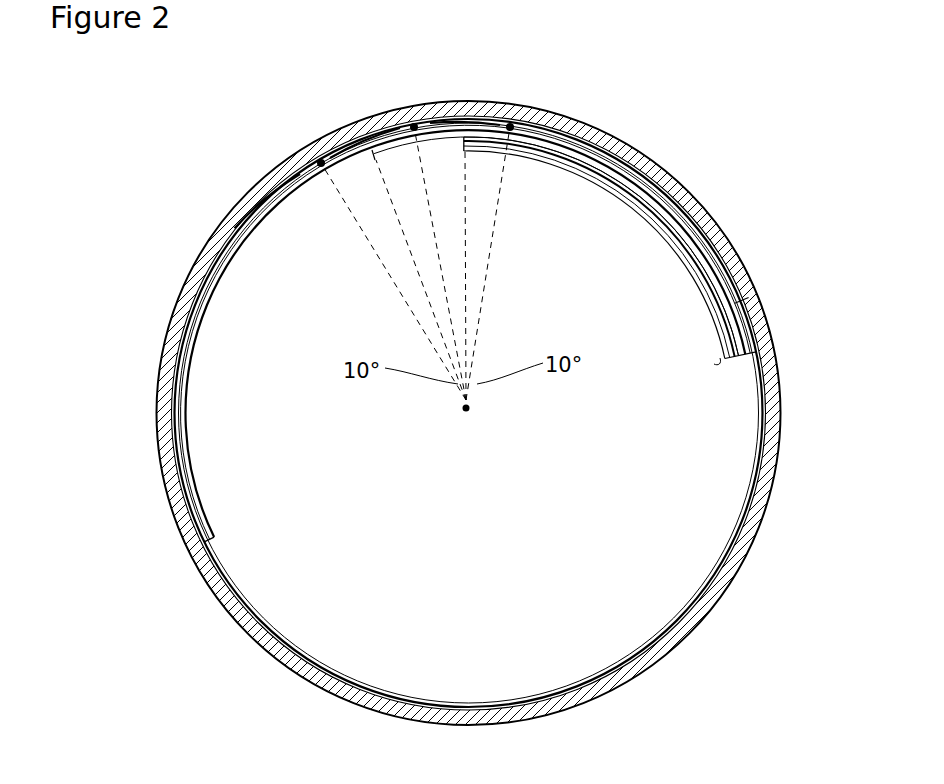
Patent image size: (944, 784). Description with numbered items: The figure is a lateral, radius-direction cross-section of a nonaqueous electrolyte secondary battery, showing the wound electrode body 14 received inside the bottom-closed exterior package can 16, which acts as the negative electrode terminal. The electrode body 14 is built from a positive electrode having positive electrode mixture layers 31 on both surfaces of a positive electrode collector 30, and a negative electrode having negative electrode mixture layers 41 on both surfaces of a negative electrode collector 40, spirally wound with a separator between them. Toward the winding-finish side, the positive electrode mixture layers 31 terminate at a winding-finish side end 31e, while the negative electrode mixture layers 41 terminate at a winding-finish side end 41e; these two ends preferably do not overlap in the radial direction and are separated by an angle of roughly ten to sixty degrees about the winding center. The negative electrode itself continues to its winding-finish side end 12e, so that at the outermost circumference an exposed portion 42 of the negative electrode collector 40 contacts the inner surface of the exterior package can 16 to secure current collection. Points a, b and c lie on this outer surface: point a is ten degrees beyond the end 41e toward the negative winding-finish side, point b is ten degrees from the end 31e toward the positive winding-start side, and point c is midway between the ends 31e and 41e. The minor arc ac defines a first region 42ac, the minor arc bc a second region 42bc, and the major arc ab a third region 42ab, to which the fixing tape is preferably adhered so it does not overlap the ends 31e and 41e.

The winding-finish side end of the negative electrode 12e is at (208, 540).
The electrode body 14 is at (738, 302).
The exterior package can 16 is at (772, 432).
The positive electrode collector 30 is at (692, 240).
The positive electrode mixture layers 31 is at (702, 262).
The winding-finish side end of the positive electrode mixture layers 31e is at (463, 150).
The negative electrode collector 40 is at (625, 168).
The negative electrode mixture layers 41 is at (652, 182).
The winding-finish side end of the negative electrode mixture layers 41e is at (372, 157).
The exposed portion 42 is at (235, 612).
The third region 42ab is at (257, 207).
The first region 42ac is at (331, 147).
The second region 42bc is at (487, 116).
The point a is at (319, 160).
The point b is at (512, 124).
The point c is at (414, 124).